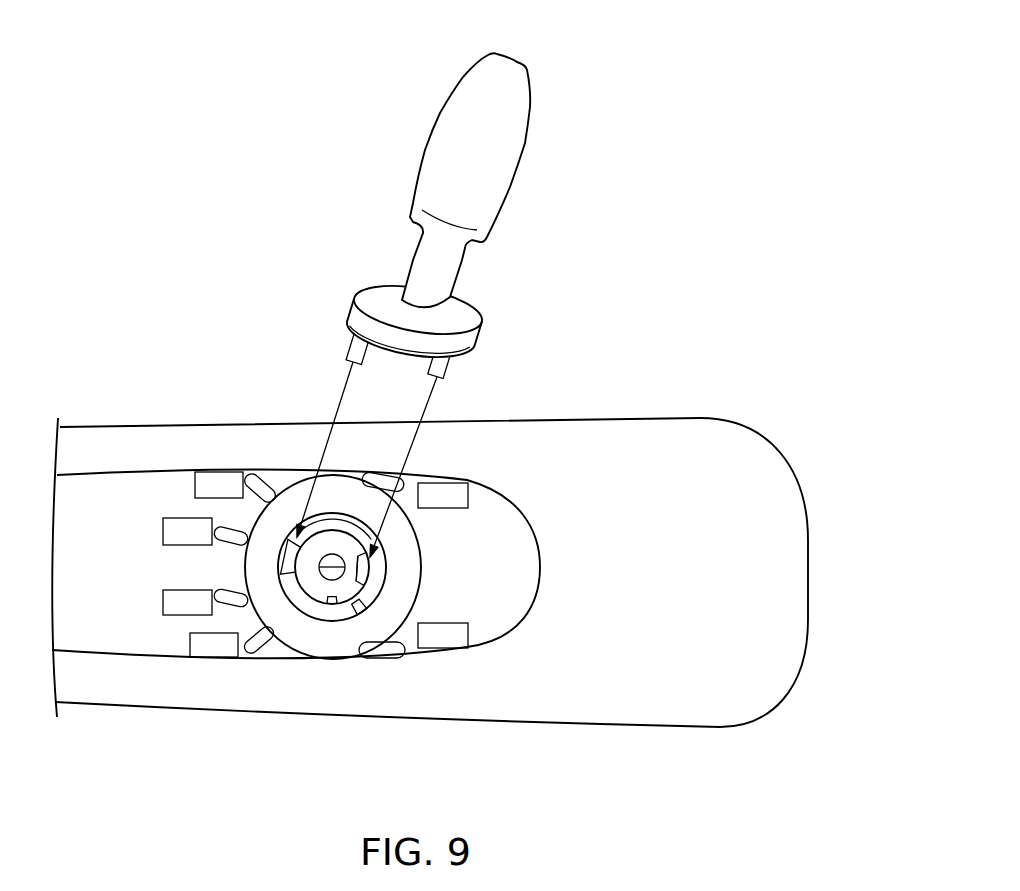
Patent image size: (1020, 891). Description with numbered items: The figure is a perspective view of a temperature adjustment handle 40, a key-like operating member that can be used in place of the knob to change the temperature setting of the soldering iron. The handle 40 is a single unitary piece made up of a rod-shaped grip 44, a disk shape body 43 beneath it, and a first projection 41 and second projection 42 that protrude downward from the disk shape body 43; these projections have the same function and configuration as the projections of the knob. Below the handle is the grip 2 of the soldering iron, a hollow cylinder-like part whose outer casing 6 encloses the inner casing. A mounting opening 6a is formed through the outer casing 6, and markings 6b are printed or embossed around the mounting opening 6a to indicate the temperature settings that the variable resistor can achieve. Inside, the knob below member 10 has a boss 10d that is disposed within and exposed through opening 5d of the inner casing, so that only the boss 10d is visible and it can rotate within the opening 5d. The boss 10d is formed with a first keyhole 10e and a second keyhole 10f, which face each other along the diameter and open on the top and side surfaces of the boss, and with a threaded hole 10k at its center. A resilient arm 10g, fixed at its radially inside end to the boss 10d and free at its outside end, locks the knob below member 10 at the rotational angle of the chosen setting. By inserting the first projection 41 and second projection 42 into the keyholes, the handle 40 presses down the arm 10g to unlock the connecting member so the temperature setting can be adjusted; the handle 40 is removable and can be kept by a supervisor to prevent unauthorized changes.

The grip 2 is at (130, 408).
The outer casing 6 is at (588, 425).
The mounting opening 6a is at (403, 538).
The markings 6b is at (228, 472).
The knob below member 10 is at (271, 592).
The boss 10d is at (328, 616).
The first keyhole 10e is at (306, 550).
The second keyhole 10f is at (365, 583).
The arm 10g is at (284, 537).
The threaded hole 10k is at (345, 561).
The opening 5d is at (358, 616).
The temperature adjustment handle 40 is at (478, 171).
The first projection 41 is at (358, 352).
The second projection 42 is at (445, 365).
The disk shape body 43 is at (370, 288).
The rod-shaped grip 44 is at (502, 158).